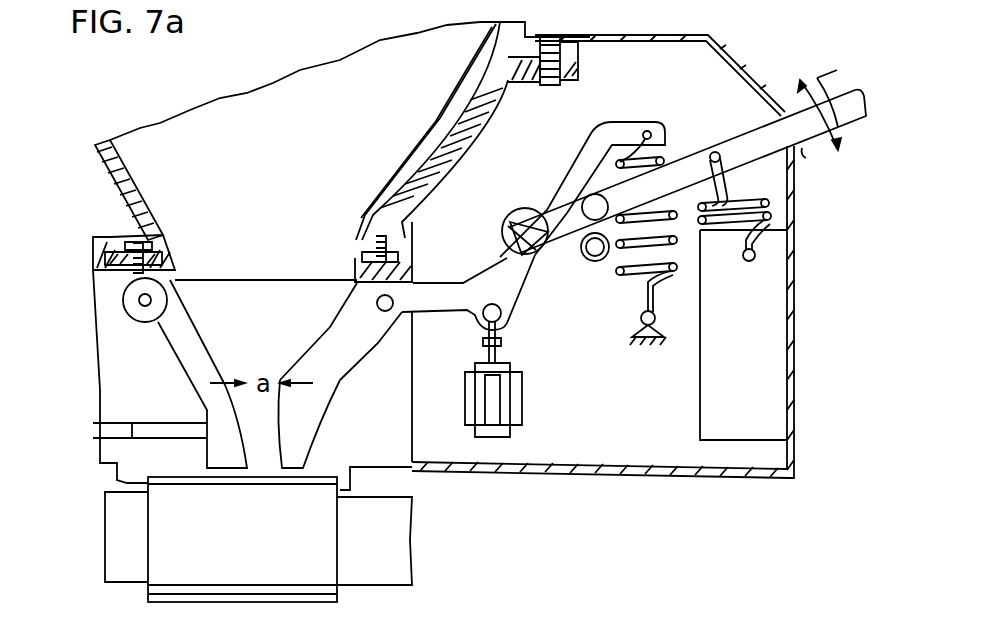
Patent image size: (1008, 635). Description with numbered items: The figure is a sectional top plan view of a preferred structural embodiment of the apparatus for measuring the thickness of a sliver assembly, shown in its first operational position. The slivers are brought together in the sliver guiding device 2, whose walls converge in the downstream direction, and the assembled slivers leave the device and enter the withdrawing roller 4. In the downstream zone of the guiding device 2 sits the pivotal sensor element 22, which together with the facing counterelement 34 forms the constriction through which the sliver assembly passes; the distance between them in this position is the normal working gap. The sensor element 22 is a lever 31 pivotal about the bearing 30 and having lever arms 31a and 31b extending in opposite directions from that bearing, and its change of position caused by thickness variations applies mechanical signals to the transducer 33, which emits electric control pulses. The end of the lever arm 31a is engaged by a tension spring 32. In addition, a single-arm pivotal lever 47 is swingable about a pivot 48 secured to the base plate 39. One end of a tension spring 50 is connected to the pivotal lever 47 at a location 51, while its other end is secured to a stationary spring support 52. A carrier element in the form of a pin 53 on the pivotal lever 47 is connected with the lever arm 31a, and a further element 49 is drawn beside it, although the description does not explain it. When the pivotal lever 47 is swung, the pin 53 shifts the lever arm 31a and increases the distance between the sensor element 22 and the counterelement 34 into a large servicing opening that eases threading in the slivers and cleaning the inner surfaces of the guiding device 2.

The sliver guiding device 2 is at (108, 184).
The withdrawing roller 4 is at (320, 545).
The sensor element 22 is at (320, 425).
The bearing 30 is at (392, 298).
The lever 31 is at (458, 320).
The lever arm 31a is at (590, 162).
The lever arm 31b is at (336, 364).
The tension spring 32 is at (676, 250).
The transducer 33 is at (508, 405).
The counterelement 34 is at (204, 400).
The base plate 39 is at (672, 80).
The single-arm pivotal lever 47 is at (847, 115).
The pivot 48 is at (522, 212).
The roller 49 is at (595, 262).
The tension spring 50 is at (770, 212).
The connection location 51 is at (712, 150).
The stationary spring support 52 is at (752, 255).
The pin 53 is at (585, 217).